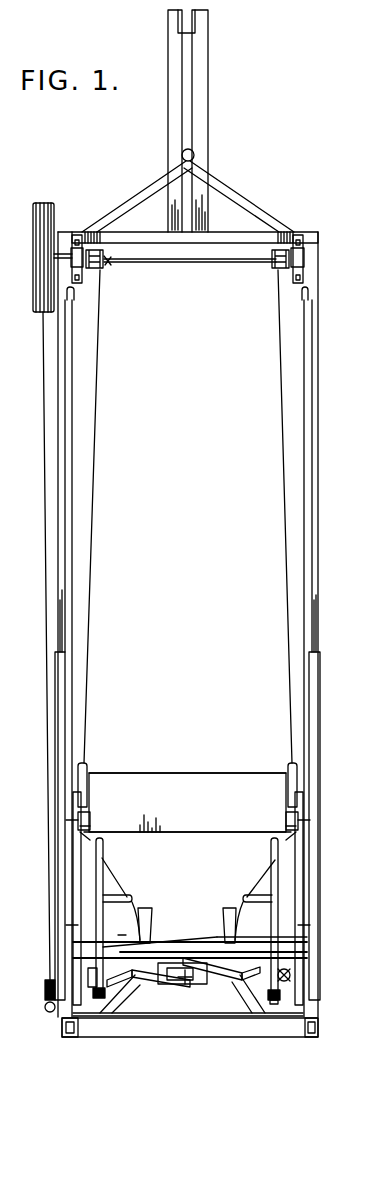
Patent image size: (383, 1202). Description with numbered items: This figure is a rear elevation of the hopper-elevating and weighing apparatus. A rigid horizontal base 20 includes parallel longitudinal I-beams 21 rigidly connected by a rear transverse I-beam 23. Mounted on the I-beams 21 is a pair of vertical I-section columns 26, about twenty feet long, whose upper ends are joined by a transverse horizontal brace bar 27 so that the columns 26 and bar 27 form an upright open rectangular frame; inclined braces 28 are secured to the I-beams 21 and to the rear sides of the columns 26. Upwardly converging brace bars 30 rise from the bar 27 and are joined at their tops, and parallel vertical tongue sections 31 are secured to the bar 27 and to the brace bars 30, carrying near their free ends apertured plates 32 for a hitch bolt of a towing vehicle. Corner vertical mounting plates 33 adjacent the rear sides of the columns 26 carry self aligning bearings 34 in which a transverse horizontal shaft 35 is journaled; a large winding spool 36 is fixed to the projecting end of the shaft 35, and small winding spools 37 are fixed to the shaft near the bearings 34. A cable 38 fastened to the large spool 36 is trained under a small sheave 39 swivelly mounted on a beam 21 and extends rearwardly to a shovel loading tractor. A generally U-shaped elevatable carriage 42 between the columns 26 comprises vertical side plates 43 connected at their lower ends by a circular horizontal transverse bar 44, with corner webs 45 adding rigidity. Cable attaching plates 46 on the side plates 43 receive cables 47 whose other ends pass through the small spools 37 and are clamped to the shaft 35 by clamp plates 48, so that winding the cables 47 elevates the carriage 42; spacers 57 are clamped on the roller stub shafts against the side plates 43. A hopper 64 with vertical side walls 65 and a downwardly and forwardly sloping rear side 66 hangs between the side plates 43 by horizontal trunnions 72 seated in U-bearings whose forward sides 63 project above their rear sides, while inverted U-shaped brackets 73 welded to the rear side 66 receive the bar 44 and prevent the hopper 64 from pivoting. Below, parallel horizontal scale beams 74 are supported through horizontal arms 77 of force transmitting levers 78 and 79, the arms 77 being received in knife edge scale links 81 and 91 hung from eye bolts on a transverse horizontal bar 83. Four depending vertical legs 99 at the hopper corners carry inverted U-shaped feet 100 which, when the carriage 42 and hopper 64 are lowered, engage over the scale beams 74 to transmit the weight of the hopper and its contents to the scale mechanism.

The horizontal base 20 is at (159, 1044).
The longitudinal I-beams 21 is at (62, 1029).
The rear transverse I-beam 23 is at (203, 1036).
The vertical columns 26 is at (52, 567).
The transverse horizontal brace bar 27 is at (164, 244).
The inclined braces 28 is at (57, 767).
The upwardly converging brace bars 30 is at (143, 188).
The vertical tongue sections 31 is at (200, 105).
The apertured plates 32 is at (193, 32).
The corner vertical mounting plates 33 is at (76, 232).
The self aligning bearings 34 is at (305, 259).
The transverse horizontal shaft 35 is at (211, 264).
The large winding spool 36 is at (42, 203).
The small winding spools 37 is at (101, 270).
The cable 38 is at (43, 424).
The small sheave 39 is at (46, 991).
The elevatable carriage 42 is at (124, 931).
The side plates 43 is at (78, 856).
The horizontal transverse bar 44 is at (256, 936).
The corner webs 45 is at (306, 937).
The cable attaching plates 46 is at (86, 770).
The cables 47 is at (87, 699).
The clamp plates 48 is at (109, 263).
The spacers 57 is at (76, 820).
The forward sides of U-bearings 63 is at (89, 819).
The hopper 64 is at (146, 768).
The vertical side walls 65 is at (220, 780).
The rear side of hopper 66 is at (125, 893).
The horizontal trunnions 72 is at (91, 830).
The inverted U-shaped brackets 73 is at (145, 909).
The scale beams 74 is at (276, 1002).
The horizontal arms 77 is at (119, 978).
The force transmitting lever 78 is at (228, 975).
The force transmitting lever 79 is at (154, 985).
The knife edge scale links 81 is at (85, 993).
The transverse horizontal bar 83 is at (168, 952).
The scale links 91 is at (291, 974).
The depending vertical legs 99 is at (103, 854).
The inverted U-shaped feet 100 is at (282, 995).